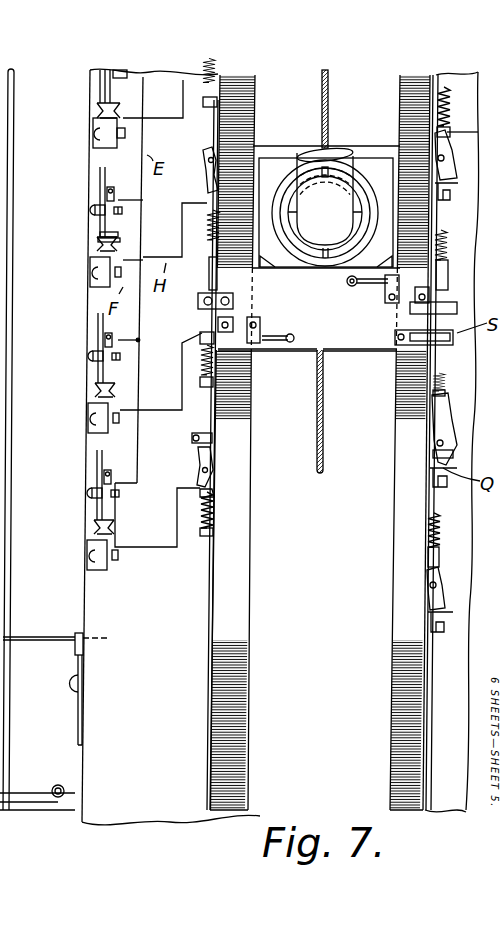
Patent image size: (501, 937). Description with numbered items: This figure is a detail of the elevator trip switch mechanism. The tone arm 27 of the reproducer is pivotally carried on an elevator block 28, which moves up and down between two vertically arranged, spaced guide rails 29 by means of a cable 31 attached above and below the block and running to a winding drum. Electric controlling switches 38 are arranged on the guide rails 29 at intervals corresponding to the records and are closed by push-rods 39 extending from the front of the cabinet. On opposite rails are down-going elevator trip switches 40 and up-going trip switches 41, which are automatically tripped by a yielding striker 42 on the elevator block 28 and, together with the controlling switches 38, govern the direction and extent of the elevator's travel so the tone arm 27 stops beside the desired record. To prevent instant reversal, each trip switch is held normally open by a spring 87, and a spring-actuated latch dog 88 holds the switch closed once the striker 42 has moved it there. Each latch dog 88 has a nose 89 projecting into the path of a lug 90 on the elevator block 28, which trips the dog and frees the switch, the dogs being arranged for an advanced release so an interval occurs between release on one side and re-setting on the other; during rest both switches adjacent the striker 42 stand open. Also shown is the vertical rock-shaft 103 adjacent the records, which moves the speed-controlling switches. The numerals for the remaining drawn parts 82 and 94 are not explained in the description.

The tone arm 27 is at (325, 206).
The elevator block 28 is at (323, 313).
The guide rails 29 is at (320, 442).
The cable 31 is at (328, 97).
The controlling switches 38 is at (110, 227).
The push-rods 39 is at (100, 242).
The down-going elevator trip switch 40 is at (200, 477).
The up-going elevator trip switch 41 is at (447, 293).
The yielding striker 42 is at (182, 343).
The spring 82 is at (437, 390).
The spring 87 is at (200, 513).
The latch dog 88 is at (200, 461).
The nose 89 is at (192, 440).
The lug 90 is at (198, 301).
The roller 94 is at (62, 800).
The vertical rock-shaft 103 is at (4, 548).